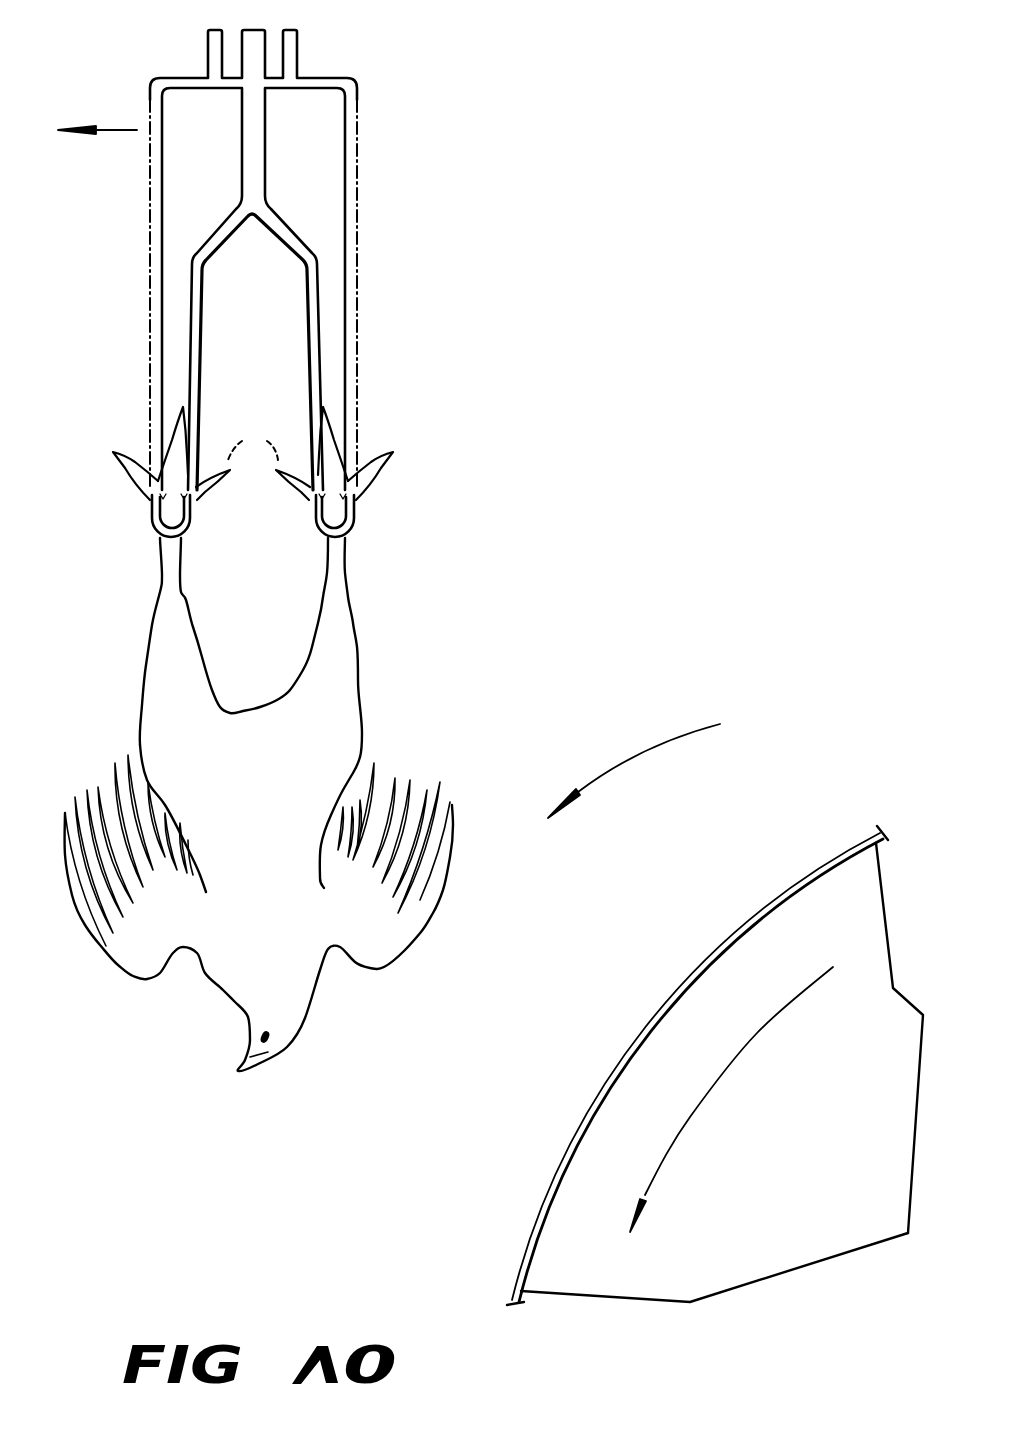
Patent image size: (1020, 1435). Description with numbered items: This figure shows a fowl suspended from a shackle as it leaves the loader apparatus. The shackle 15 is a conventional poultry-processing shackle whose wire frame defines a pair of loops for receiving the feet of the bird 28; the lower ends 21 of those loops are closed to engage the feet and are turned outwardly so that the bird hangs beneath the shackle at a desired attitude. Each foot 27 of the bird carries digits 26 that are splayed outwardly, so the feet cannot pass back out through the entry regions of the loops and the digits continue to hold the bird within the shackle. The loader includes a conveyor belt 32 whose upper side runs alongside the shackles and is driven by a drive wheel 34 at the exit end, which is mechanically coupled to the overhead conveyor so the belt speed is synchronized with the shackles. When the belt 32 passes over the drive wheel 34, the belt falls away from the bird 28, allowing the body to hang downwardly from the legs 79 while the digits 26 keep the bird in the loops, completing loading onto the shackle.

The shackle 15 is at (150, 278).
The lower ends of the loops 21 is at (155, 532).
The digits 26 is at (127, 453).
The foot 27 is at (253, 437).
The legs 79 is at (174, 584).
The bird 28 is at (368, 713).
The conveyor belt 32 is at (650, 1026).
The drive wheel 34 is at (748, 1273).